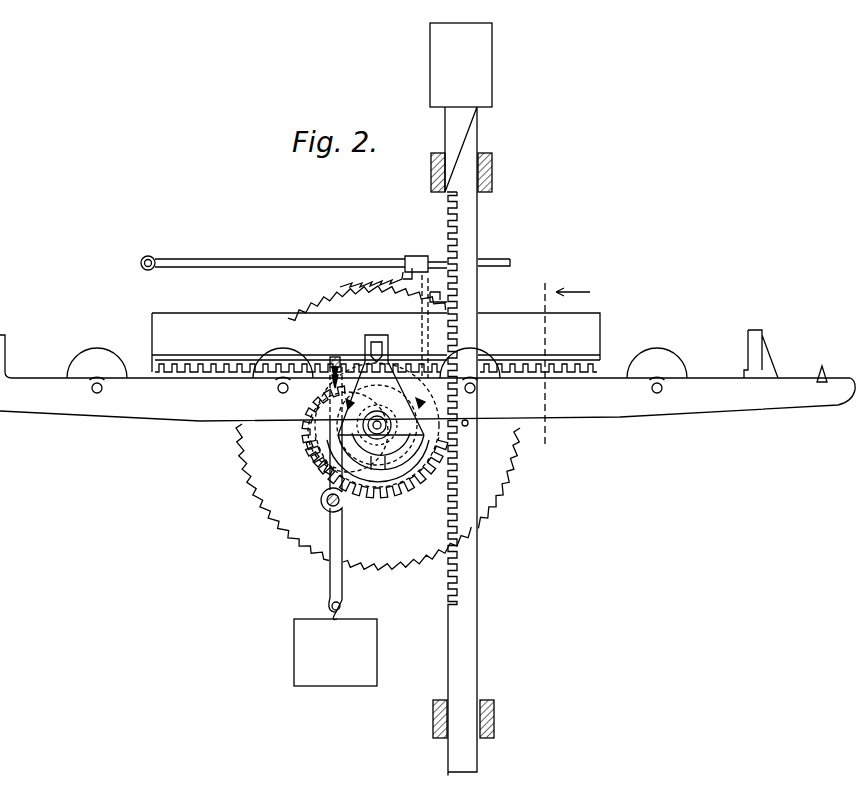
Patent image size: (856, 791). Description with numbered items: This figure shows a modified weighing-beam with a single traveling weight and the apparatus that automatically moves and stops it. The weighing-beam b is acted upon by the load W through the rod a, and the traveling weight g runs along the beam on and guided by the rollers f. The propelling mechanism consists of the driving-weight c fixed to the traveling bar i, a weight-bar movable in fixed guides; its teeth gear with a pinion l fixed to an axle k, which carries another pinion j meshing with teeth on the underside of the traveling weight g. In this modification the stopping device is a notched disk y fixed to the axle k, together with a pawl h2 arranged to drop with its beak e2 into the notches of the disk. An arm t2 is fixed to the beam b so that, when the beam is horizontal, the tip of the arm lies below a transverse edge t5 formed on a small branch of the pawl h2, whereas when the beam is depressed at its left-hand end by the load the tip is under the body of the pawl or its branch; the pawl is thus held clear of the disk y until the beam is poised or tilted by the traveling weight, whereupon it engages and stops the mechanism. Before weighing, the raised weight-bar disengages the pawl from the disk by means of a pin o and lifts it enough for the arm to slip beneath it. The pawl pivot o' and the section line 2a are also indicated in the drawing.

The driving-weight c is at (469, 65).
The traveling bar i is at (462, 441).
The pawl h2 is at (278, 259).
The pivot of lever rod o' is at (131, 263).
The transverse edge t5 is at (426, 251).
The beak e2 is at (393, 286).
The arm t2 is at (420, 304).
The traveling weight g is at (376, 342).
The rollers f is at (110, 372).
The weighing-beam b is at (427, 375).
The axle k is at (390, 425).
The pinion j is at (341, 434).
The pinion l is at (412, 482).
The pin o is at (477, 432).
The notched disk y is at (378, 428).
The rod a is at (329, 580).
The load W is at (335, 652).
The section line 2a is at (563, 362).